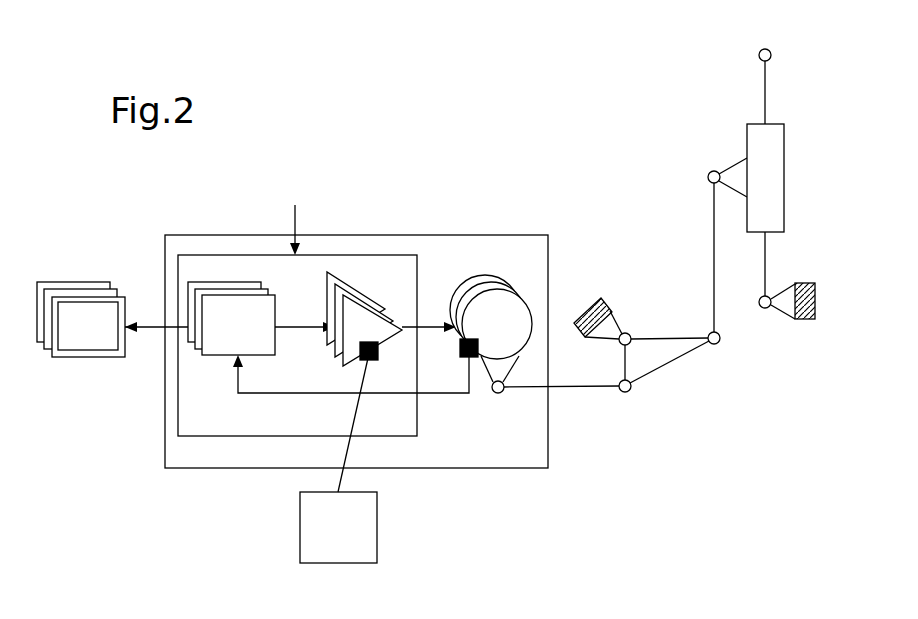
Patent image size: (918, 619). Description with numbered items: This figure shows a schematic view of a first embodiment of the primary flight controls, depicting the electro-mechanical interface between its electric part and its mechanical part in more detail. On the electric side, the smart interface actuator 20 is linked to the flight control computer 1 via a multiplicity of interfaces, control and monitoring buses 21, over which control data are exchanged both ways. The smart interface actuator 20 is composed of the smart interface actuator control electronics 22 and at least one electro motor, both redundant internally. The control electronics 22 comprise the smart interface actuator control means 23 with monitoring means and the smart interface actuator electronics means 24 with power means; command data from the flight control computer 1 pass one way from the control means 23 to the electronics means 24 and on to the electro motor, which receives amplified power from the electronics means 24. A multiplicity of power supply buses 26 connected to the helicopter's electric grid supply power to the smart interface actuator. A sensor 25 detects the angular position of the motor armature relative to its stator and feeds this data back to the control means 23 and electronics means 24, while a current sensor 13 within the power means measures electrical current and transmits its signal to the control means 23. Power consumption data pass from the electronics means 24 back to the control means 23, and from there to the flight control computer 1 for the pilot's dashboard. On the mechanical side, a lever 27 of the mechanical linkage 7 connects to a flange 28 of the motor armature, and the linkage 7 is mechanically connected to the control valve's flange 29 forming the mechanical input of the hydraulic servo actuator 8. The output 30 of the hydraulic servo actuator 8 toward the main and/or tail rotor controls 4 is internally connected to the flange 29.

The flight control computer 1 is at (79, 340).
The main and/or tail rotor controls 4 is at (771, 55).
The mechanical linkage 7 is at (729, 361).
The hydraulic servo actuator 8 is at (775, 182).
The current sensor 13 is at (324, 538).
The smart interface actuator 20 is at (438, 205).
The interfaces, control and monitoring buses 21 is at (153, 323).
The smart interface actuator control electronics 22 is at (195, 447).
The smart interface actuator control means 23 is at (224, 339).
The smart interface actuator electronics means 24 is at (355, 314).
The sensor 25 is at (460, 351).
The power supply buses 26 is at (308, 192).
The lever 27 is at (597, 388).
The flange 28 is at (498, 394).
The control valve's flange 29 is at (714, 171).
The output 30 is at (765, 100).